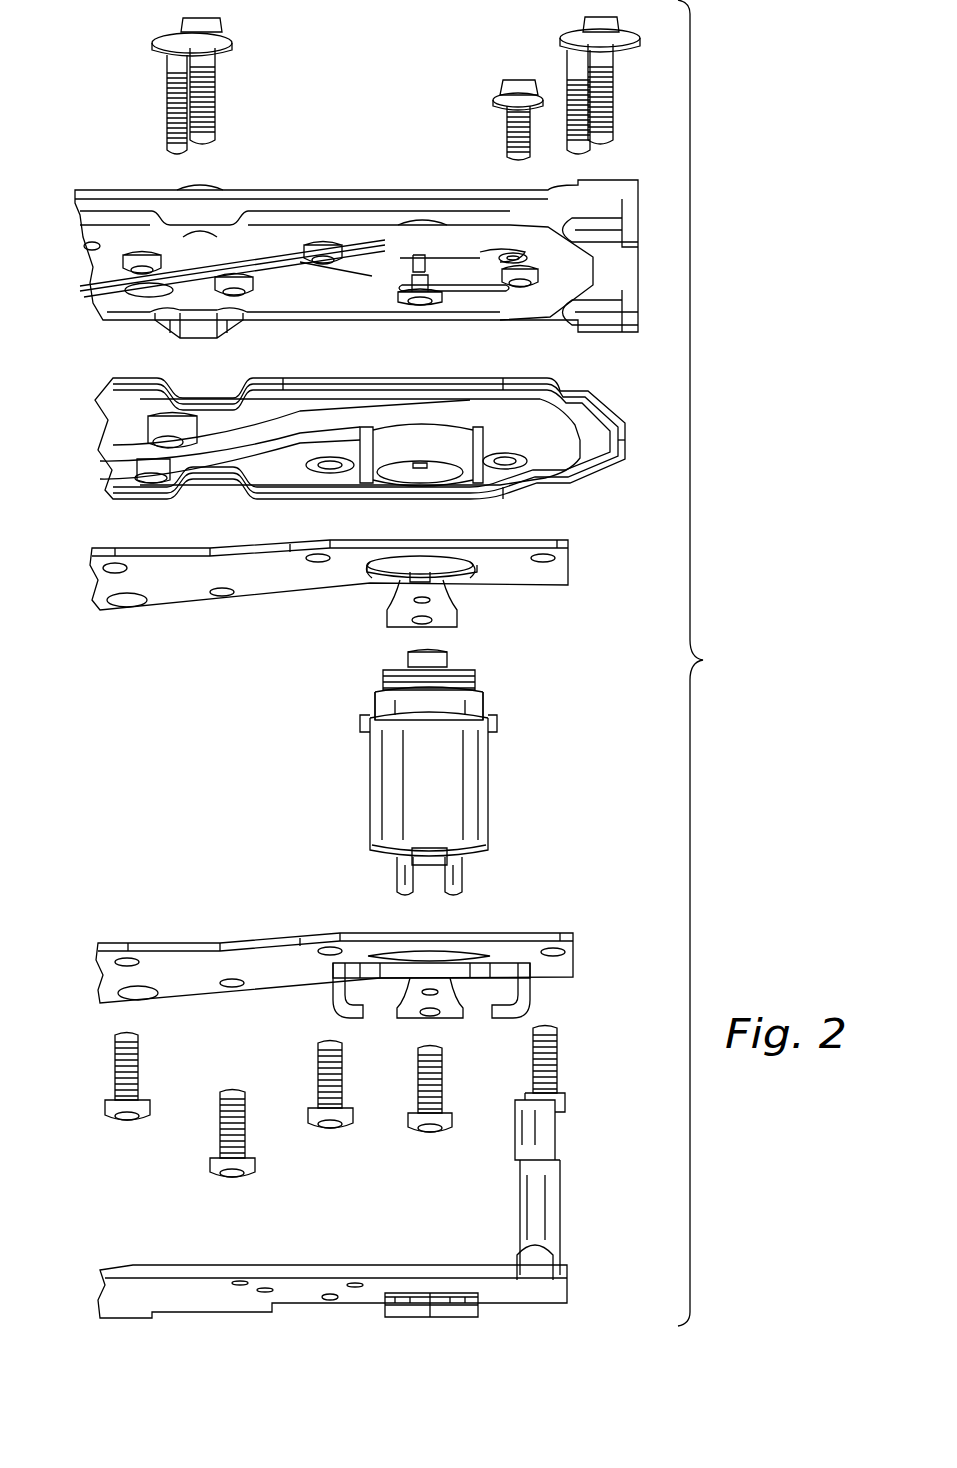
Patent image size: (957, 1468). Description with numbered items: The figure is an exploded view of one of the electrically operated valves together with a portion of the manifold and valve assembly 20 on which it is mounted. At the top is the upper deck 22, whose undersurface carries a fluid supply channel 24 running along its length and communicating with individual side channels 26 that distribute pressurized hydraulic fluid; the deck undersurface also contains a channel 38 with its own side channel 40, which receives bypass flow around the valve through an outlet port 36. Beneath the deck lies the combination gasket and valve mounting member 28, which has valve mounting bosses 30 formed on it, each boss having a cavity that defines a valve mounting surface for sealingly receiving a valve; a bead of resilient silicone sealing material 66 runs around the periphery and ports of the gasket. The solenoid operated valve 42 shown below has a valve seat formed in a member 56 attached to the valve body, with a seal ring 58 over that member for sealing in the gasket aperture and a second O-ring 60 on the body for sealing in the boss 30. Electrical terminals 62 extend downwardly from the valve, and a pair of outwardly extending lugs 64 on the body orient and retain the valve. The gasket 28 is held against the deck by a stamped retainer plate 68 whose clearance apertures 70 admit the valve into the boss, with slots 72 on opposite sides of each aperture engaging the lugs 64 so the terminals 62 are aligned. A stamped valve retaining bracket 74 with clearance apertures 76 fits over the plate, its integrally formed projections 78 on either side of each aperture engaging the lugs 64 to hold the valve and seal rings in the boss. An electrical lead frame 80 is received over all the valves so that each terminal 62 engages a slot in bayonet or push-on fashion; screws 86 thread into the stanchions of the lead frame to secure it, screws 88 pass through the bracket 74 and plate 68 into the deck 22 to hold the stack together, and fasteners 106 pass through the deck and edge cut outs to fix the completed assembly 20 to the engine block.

The manifold and valve assembly 20 is at (708, 663).
The upper deck 22 is at (130, 185).
The fluid supply channel 24 is at (275, 265).
The side channels 26 is at (418, 258).
The combination gasket and valve mounting member 28 is at (115, 418).
The valve mounting bosses 30 is at (412, 435).
The outlet port 36 is at (423, 467).
The channel 38 is at (477, 290).
The side channel 40 is at (422, 265).
The solenoid operated valve 42 is at (492, 768).
The valve seat member 56 is at (470, 672).
The seal ring 58 is at (405, 660).
The second O-ring 60 is at (378, 692).
The electrical terminals 62 is at (395, 880).
The lugs 64 is at (365, 730).
The bead of resilient sealing material 66 is at (273, 437).
The retainer plate 68 is at (120, 583).
The clearance apertures 70 is at (418, 563).
The slots 72 is at (380, 573).
The valve retaining bracket 74 is at (110, 978).
The clearance apertures 76 is at (433, 957).
The projections 78 is at (340, 1000).
The electrical lead frame 80 is at (237, 1265).
The screws 86 is at (187, 103).
The screws 88 is at (222, 1110).
The fasteners 106 is at (507, 130).